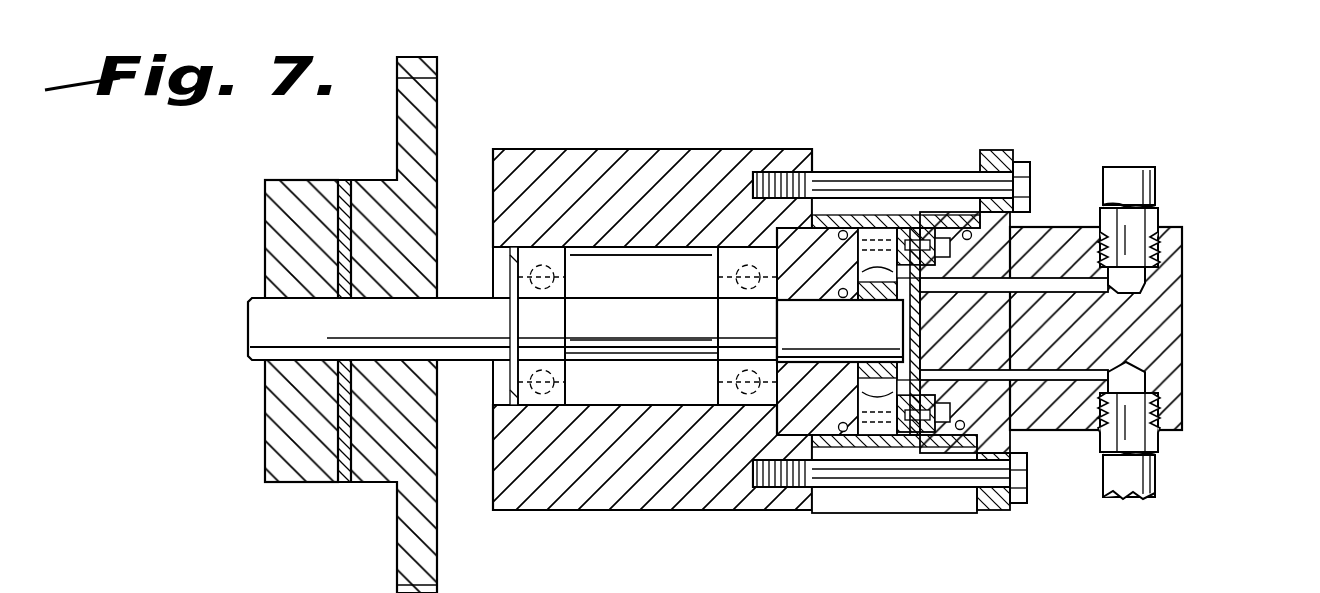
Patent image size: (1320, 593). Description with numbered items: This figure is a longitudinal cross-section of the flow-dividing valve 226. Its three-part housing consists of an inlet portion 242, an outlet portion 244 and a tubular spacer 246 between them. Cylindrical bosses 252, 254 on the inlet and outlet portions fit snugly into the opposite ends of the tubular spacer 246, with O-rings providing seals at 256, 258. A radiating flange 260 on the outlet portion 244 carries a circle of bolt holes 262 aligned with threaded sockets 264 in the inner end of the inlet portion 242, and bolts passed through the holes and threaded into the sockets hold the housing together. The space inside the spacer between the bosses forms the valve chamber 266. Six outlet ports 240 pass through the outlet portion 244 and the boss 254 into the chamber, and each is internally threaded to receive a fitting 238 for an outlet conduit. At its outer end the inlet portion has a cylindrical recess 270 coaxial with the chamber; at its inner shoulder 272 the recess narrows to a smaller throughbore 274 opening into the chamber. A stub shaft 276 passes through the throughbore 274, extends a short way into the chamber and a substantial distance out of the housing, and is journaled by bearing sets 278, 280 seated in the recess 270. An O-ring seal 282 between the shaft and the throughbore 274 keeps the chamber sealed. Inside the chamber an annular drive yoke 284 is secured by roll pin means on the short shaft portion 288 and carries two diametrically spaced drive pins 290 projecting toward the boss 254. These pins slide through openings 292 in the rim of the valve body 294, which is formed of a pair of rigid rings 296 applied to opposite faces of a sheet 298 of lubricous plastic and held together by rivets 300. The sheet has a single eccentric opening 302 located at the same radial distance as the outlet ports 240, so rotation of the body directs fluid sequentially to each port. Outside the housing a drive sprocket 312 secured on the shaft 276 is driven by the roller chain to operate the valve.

The flow-dividing valve 226 is at (728, 112).
The fitting 238 is at (1160, 216).
The outlet port 240 is at (1165, 246).
The inlet portion 242 is at (532, 512).
The outlet portion 244 is at (1085, 432).
The tubular spacer 246 is at (840, 450).
The cylindrical boss 252 is at (858, 405).
The cylindrical boss 254 is at (925, 345).
The O-ring seal 256 is at (848, 418).
The O-ring seal 258 is at (990, 384).
The radiating flange 260 is at (1000, 512).
The bolt hole 262 is at (998, 178).
The threaded socket 264 is at (772, 182).
The valve chamber 266 is at (860, 272).
The cylindrical recess 270 is at (630, 396).
The shoulder 272 is at (748, 378).
The throughbore 274 is at (792, 370).
The stub shaft 276 is at (266, 326).
The bearing set 278 is at (556, 330).
The bearing set 280 is at (737, 311).
The O-ring seal 282 is at (840, 370).
The annular drive yoke 284 is at (862, 230).
The axial short portion 288 is at (932, 320).
The drive pin 290 is at (908, 238).
The opening 292 is at (937, 437).
The valve body 294 is at (930, 300).
The rigid ring 296 is at (924, 240).
The sheet 298 is at (1092, 294).
The rivet 300 is at (951, 248).
The eccentric opening 302 is at (878, 319).
The drive sprocket 312 is at (438, 113).